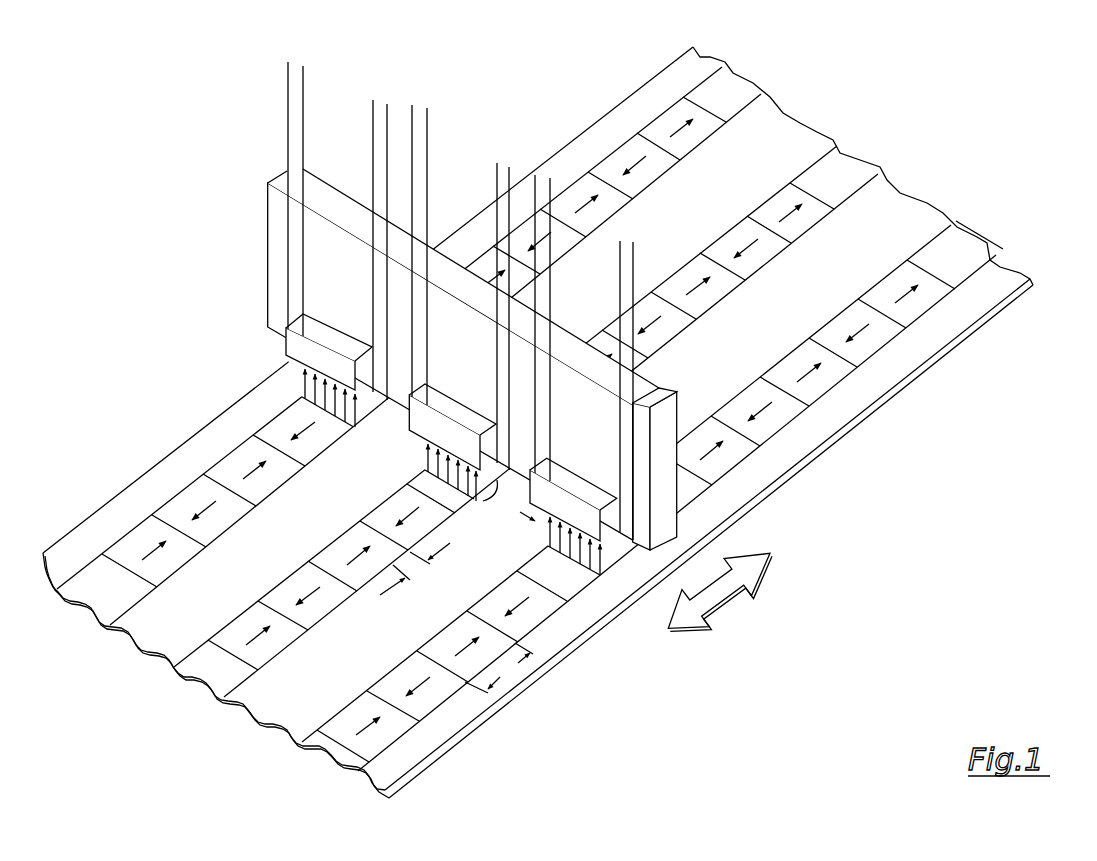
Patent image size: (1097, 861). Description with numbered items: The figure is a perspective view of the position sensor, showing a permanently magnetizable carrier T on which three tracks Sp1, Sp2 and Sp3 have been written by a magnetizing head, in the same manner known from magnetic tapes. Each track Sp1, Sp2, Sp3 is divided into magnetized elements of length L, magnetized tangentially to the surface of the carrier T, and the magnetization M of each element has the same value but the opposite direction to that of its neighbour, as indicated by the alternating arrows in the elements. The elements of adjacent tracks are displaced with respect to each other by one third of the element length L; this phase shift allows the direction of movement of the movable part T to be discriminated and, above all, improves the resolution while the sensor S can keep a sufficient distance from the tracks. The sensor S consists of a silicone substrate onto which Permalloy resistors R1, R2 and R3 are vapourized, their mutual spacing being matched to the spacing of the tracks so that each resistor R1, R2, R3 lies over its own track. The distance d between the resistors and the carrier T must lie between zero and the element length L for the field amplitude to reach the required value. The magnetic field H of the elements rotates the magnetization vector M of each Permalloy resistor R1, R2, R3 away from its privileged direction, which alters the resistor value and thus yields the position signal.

The carrier T is at (787, 138).
The first magnetic track Sp1 is at (722, 84).
The second magnetic track Sp2 is at (840, 168).
The third magnetic track Sp3 is at (952, 245).
The first Permalloy resistor R1 is at (329, 244).
The second Permalloy resistor R2 is at (434, 300).
The third Permalloy resistor R3 is at (557, 369).
The sensor S is at (648, 395).
The distance d is at (488, 502).
The magnetic field H is at (522, 530).
The length of magnetized element L is at (499, 668).
The magnetization M is at (413, 680).